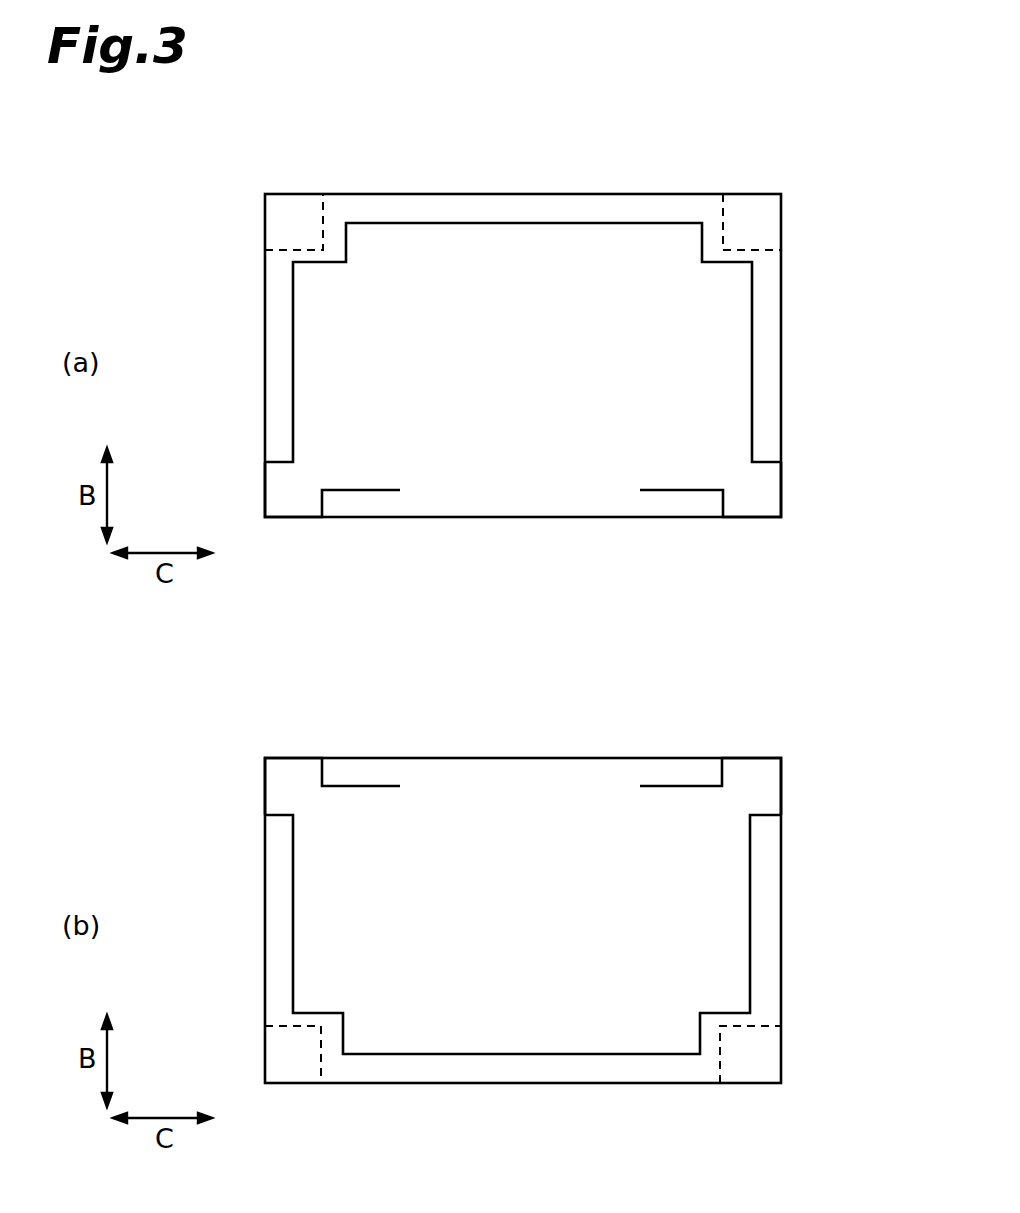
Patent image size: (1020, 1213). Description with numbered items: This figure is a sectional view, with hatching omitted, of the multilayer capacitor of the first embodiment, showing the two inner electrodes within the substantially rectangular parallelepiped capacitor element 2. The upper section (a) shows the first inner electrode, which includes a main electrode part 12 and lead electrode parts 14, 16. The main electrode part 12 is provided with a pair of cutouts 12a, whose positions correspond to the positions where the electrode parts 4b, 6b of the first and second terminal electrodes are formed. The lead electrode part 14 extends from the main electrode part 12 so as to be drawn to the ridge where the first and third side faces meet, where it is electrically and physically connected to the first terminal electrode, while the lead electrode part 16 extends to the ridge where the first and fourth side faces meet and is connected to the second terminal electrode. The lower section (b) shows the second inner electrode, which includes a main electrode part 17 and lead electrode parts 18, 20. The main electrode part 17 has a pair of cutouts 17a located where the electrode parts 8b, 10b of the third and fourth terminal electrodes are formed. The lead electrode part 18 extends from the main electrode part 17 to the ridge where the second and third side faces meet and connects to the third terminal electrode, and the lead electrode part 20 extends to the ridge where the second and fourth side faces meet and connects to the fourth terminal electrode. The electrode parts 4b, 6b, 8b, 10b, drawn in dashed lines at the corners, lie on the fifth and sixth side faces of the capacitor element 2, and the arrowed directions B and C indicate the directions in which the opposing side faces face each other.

The capacitor element 2 is at (280, 962).
The electrode part 4b is at (291, 1060).
The electrode part 6b is at (752, 1060).
The electrode part 8b is at (296, 207).
The electrode part 10b is at (750, 207).
The main electrode part 12 is at (722, 360).
The cutouts 12a is at (345, 263).
The lead electrode part 14 is at (292, 506).
The lead electrode part 16 is at (754, 505).
The main electrode part 17 is at (725, 920).
The cutouts 17a is at (343, 1013).
The lead electrode part 18 is at (293, 773).
The lead electrode part 20 is at (747, 773).